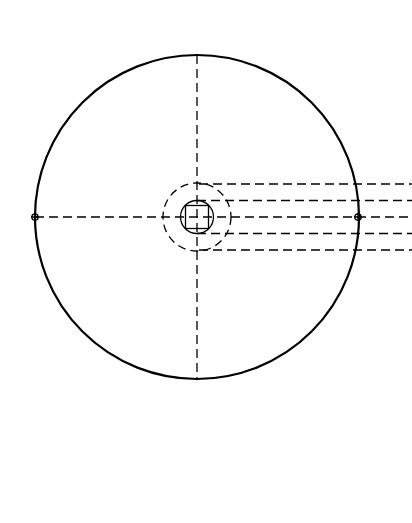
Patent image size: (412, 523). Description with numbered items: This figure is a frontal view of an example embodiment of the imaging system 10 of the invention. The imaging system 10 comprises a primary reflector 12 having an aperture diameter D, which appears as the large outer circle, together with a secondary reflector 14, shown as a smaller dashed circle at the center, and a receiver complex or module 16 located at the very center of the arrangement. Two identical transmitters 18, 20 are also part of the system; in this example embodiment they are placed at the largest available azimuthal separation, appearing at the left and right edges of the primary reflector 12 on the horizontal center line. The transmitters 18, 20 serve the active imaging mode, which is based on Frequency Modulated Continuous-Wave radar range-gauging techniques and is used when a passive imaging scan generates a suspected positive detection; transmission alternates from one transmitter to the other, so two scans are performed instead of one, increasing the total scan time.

The imaging system 10 is at (106, 62).
The primary reflector 12 is at (253, 63).
The secondary reflector 14 is at (182, 185).
The receiver complex or module 16 is at (199, 203).
The transmitter 18 is at (35, 221).
The transmitter 20 is at (360, 220).